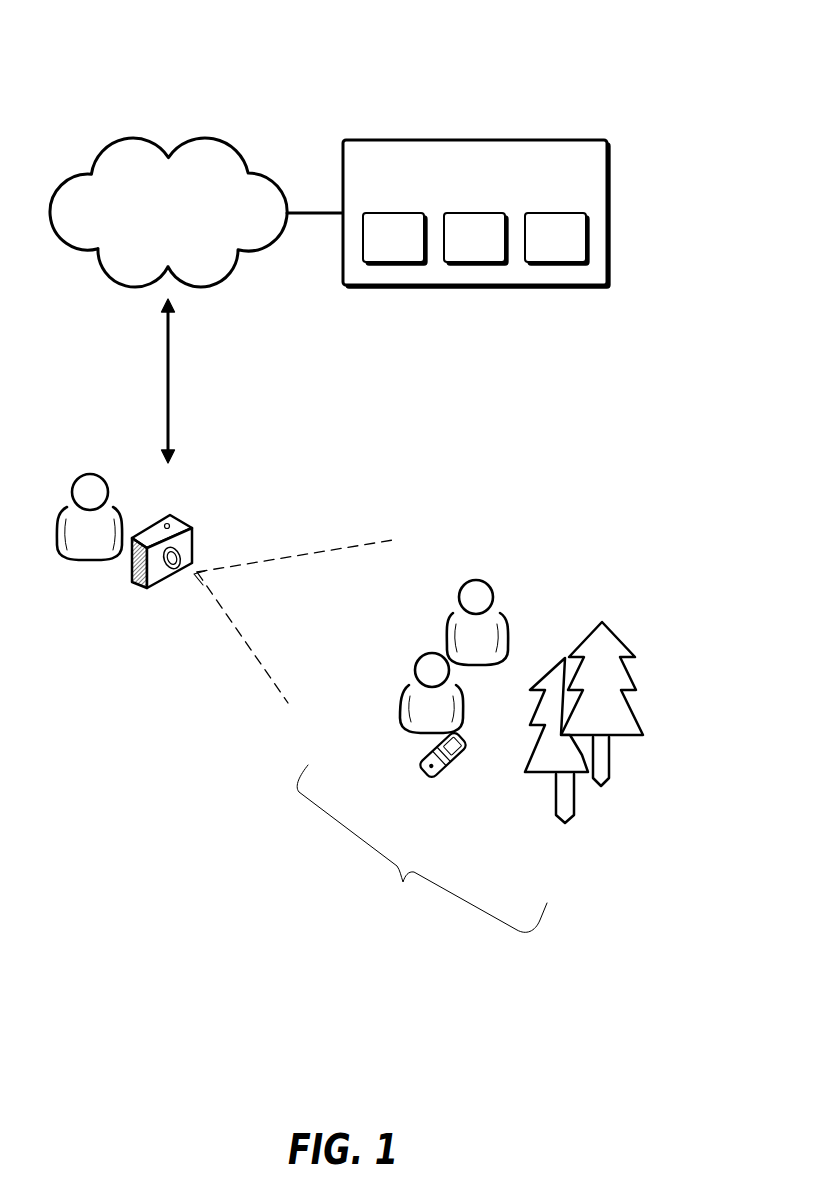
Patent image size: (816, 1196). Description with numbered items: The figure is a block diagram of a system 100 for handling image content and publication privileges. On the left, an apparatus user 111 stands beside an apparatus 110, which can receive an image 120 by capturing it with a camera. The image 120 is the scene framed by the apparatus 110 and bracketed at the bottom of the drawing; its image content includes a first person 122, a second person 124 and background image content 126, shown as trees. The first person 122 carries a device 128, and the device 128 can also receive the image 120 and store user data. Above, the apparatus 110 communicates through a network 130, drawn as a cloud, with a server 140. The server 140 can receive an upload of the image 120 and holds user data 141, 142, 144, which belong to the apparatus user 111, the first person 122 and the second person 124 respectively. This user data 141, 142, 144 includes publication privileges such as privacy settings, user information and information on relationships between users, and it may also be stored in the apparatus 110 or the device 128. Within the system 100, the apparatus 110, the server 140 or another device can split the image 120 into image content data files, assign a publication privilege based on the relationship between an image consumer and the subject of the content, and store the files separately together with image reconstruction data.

The system 100 is at (680, 62).
The apparatus 110 is at (138, 588).
The apparatus user 111 is at (60, 557).
The image 120 is at (372, 736).
The first person 122 is at (407, 688).
The second person 124 is at (452, 616).
The background image content 126 is at (637, 699).
The device 128 is at (427, 778).
The network 130 is at (122, 140).
The server 140 is at (456, 140).
The user data 141 is at (395, 239).
The user data 142 is at (476, 239).
The user data 144 is at (557, 239).